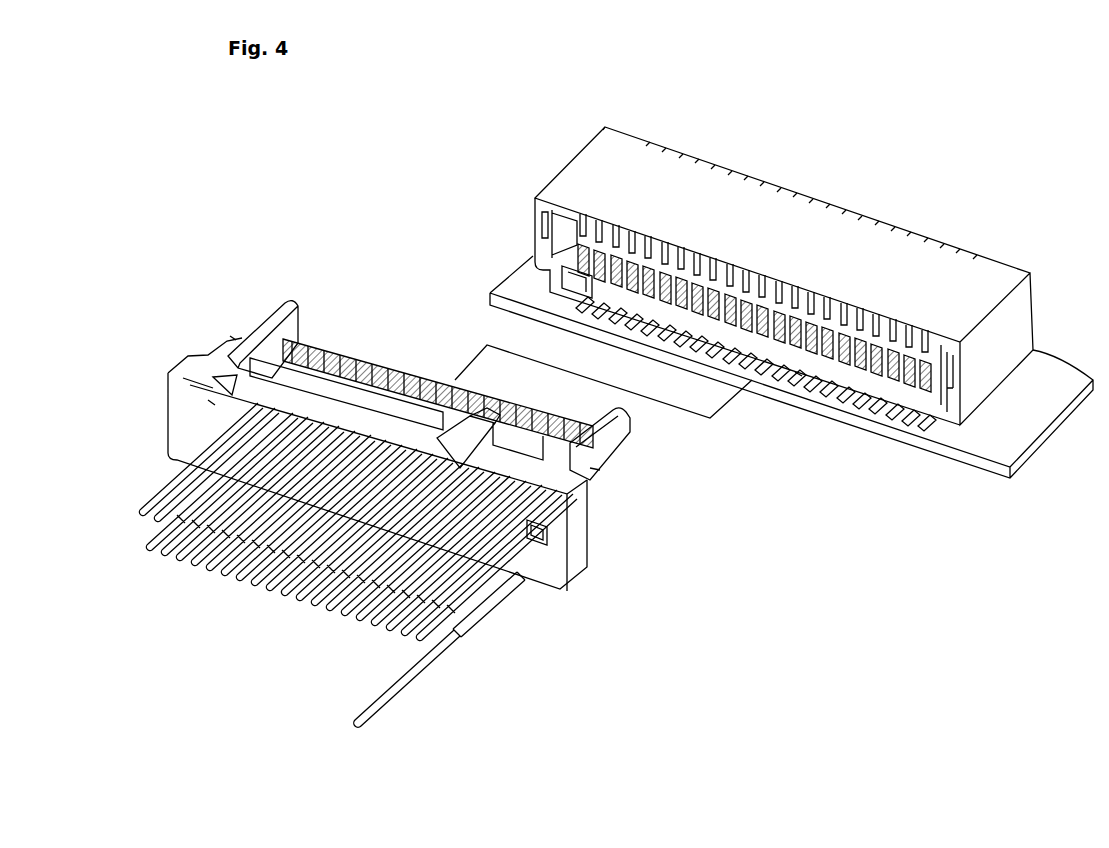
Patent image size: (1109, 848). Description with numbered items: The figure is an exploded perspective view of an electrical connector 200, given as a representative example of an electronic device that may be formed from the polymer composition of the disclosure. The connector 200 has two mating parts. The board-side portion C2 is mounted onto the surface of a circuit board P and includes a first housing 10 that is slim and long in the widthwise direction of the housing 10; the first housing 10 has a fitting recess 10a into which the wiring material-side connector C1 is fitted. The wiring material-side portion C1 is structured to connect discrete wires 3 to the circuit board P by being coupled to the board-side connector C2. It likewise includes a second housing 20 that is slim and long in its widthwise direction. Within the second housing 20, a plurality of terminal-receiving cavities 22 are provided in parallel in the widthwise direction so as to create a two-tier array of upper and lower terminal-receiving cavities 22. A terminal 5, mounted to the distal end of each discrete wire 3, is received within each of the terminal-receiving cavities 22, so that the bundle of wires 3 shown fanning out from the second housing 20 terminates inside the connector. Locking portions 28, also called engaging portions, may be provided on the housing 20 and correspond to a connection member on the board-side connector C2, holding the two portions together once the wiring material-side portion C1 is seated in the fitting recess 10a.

The electrical connector 200 is at (753, 80).
The first housing 10 is at (540, 197).
The fitting recess 10a is at (583, 292).
The second housing 20 is at (577, 570).
The terminal-receiving cavities 22 is at (565, 511).
The locking portions 28 is at (600, 468).
The discrete wires 3 is at (380, 700).
The terminal 5 is at (459, 655).
The circuit board P is at (1045, 410).
The wiring material-side portion C1 is at (239, 332).
The board-side portion C2 is at (593, 124).